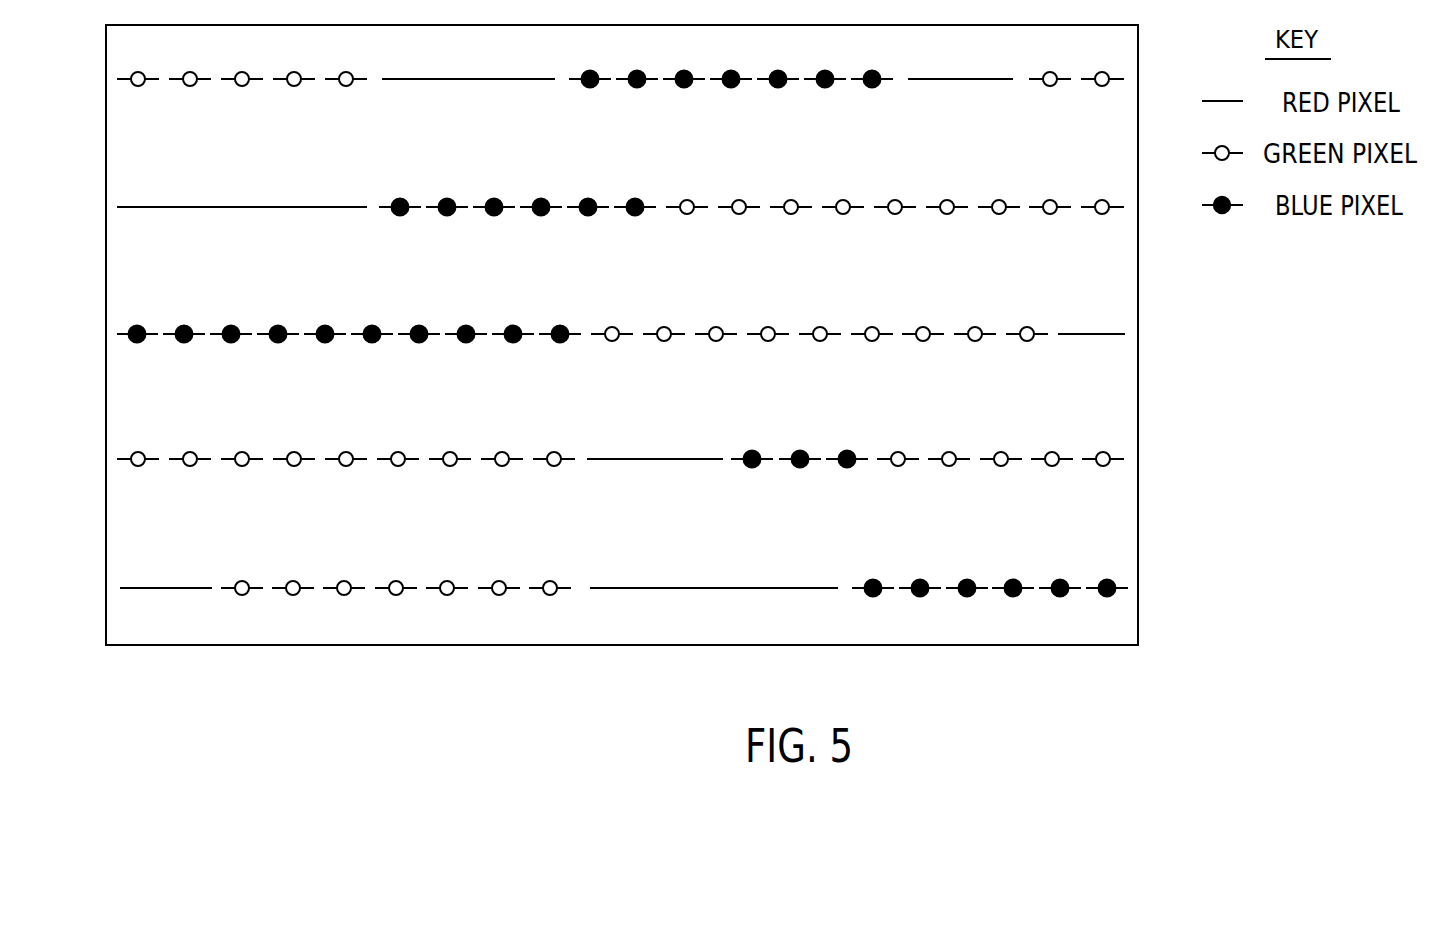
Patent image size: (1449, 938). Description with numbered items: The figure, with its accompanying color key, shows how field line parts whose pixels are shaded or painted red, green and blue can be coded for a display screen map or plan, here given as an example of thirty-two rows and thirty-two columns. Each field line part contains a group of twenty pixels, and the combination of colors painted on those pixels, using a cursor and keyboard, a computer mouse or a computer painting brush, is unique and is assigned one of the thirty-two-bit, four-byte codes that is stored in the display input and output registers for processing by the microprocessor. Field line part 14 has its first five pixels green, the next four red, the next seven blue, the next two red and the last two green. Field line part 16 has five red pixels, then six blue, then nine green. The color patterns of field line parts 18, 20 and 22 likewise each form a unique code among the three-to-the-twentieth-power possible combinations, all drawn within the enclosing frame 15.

The field line part 14 is at (106, 83).
The field line part 16 is at (106, 208).
The field line part 18 is at (106, 335).
The field line part 20 is at (106, 460).
The field line part 22 is at (106, 588).
The display panel 15 is at (1140, 530).